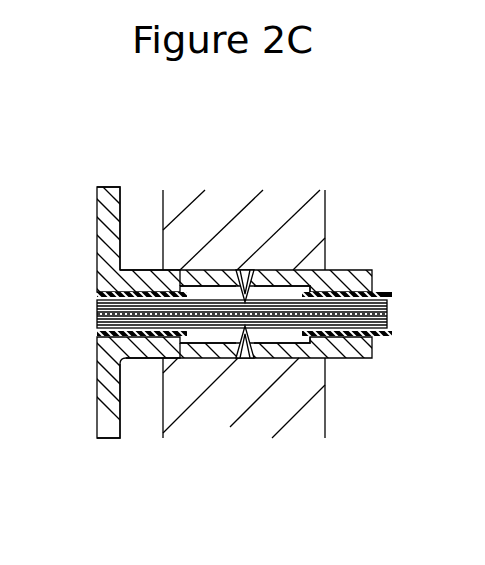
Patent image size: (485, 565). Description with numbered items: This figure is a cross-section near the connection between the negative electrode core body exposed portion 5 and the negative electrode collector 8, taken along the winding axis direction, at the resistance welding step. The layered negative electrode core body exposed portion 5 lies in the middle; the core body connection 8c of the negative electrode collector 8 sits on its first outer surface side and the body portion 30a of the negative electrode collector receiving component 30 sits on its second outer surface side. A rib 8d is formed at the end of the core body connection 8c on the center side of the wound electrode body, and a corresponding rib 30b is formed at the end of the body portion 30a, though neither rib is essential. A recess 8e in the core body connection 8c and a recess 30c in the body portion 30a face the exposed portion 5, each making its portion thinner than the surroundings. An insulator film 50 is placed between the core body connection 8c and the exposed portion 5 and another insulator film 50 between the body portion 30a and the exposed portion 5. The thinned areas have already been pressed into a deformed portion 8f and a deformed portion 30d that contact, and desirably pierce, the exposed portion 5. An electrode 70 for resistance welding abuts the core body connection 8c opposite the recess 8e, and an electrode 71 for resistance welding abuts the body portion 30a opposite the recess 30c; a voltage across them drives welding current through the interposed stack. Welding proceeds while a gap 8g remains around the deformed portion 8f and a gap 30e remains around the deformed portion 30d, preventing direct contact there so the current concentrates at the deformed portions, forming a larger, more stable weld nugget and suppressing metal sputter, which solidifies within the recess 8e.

The negative electrode core body exposed portion 5 is at (373, 310).
The negative electrode collector 8 is at (343, 262).
The core body connection 8c is at (143, 282).
The rib 8d is at (107, 222).
The recess 8e is at (210, 283).
The deformed portion 8f is at (272, 285).
The gap 8g is at (293, 292).
The negative electrode collector receiving component 30 is at (349, 376).
The body portion 30a is at (138, 344).
The rib 30b is at (107, 425).
The recess 30c is at (202, 344).
The deformed portion 30d is at (288, 334).
The gap 30e is at (302, 352).
The insulator film 50 is at (97, 296).
The electrode for resistance welding 70 is at (248, 222).
The electrode for resistance welding 71 is at (242, 398).